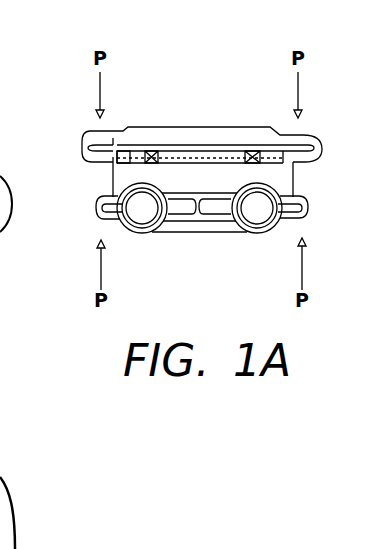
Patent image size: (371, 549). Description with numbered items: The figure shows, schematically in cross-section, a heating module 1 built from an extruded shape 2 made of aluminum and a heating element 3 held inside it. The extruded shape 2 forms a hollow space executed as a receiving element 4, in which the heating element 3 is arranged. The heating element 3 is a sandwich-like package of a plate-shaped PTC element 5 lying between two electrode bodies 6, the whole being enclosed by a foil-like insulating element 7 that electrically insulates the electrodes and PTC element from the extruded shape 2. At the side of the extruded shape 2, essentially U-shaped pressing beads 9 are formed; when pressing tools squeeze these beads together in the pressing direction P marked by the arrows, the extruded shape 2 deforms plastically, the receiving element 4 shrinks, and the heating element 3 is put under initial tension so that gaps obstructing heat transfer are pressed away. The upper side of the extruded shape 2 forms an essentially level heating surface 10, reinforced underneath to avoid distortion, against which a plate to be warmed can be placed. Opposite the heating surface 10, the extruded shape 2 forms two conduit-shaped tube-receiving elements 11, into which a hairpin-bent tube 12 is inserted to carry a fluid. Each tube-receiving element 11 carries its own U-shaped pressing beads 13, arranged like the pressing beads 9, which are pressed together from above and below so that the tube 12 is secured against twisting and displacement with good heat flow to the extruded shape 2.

The heating module 1 is at (209, 54).
The extruded shape 2 is at (297, 173).
The heating element 3 is at (106, 169).
The receiving element 4 is at (321, 141).
The PTC element 5 is at (207, 143).
The electrode bodies 6 is at (134, 143).
The insulating element 7 is at (231, 135).
The pressing beads 9 is at (73, 161).
The heating surface 10 is at (160, 136).
The tube-receiving elements 11 is at (170, 231).
The tube 12 is at (275, 237).
The pressing beads 13 is at (319, 224).